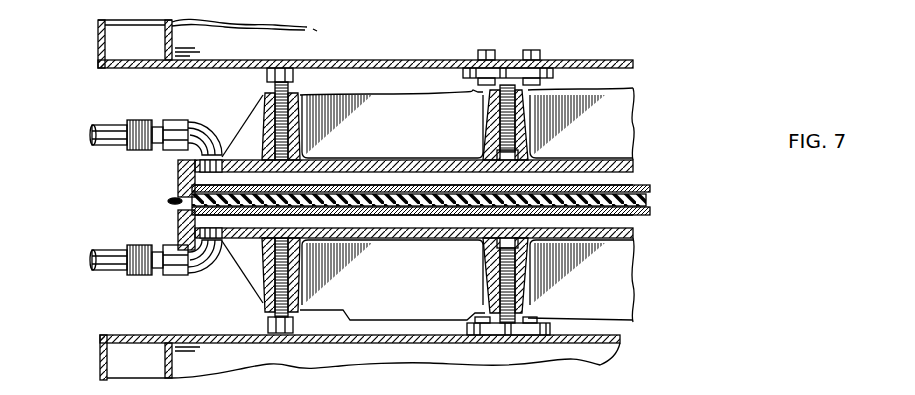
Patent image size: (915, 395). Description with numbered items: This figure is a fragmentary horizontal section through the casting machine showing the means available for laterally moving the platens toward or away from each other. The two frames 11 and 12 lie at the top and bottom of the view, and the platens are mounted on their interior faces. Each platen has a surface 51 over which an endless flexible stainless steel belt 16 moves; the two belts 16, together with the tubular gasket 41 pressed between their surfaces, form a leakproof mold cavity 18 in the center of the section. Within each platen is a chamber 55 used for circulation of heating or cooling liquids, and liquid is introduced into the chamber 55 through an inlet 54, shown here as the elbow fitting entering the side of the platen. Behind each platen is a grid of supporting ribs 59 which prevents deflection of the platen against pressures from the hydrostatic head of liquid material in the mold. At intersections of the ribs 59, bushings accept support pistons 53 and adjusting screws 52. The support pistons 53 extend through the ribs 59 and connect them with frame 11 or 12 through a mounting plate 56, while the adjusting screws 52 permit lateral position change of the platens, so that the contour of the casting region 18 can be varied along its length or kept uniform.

The frame 11 is at (100, 368).
The frame 12 is at (98, 35).
The endless flexible stainless steel belt 16 is at (650, 192).
The mold cavity 18 is at (648, 200).
The tubular gasket 41 is at (182, 201).
The platen surface 51 is at (387, 185).
The adjusting screw 52 is at (272, 92).
The support piston 53 is at (505, 113).
The inlet 54 is at (197, 130).
The chamber 55 is at (630, 177).
The mounting plate 56 is at (556, 70).
The supporting rib 59 is at (628, 95).